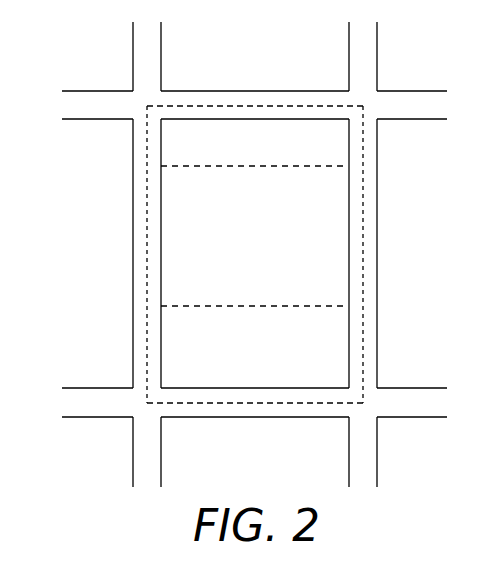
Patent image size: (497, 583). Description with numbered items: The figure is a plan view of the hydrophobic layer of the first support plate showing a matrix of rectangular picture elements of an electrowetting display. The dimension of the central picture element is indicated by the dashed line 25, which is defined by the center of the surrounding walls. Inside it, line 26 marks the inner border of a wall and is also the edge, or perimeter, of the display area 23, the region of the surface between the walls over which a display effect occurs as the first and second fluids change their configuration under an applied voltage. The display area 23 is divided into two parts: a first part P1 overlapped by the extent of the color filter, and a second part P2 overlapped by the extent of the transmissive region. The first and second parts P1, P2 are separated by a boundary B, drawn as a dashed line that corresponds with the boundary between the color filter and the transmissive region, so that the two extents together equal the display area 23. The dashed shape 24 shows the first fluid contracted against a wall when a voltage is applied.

The first part of the display area P1 is at (177, 228).
The second part of the display area P2 is at (177, 348).
The display area 23 is at (268, 278).
The dashed shape of contracted first fluid 24 is at (313, 168).
The dashed line indicating picture element dimension 25 is at (363, 220).
The inner border line of wall 26 is at (348, 275).
The boundary B is at (313, 308).